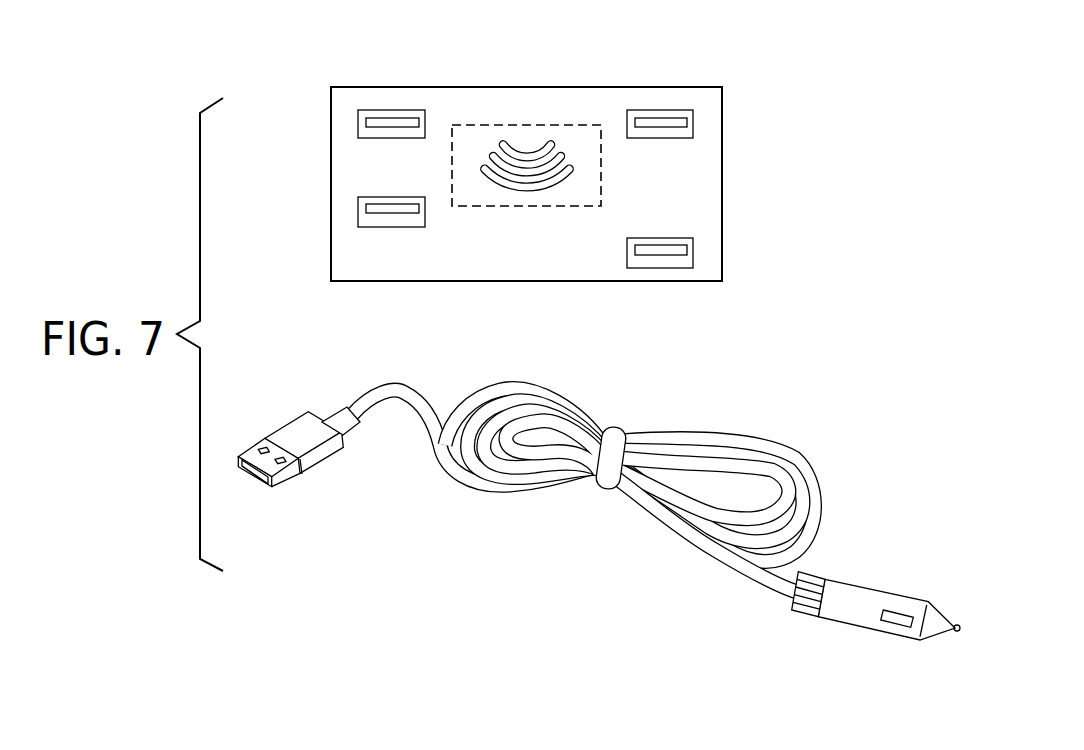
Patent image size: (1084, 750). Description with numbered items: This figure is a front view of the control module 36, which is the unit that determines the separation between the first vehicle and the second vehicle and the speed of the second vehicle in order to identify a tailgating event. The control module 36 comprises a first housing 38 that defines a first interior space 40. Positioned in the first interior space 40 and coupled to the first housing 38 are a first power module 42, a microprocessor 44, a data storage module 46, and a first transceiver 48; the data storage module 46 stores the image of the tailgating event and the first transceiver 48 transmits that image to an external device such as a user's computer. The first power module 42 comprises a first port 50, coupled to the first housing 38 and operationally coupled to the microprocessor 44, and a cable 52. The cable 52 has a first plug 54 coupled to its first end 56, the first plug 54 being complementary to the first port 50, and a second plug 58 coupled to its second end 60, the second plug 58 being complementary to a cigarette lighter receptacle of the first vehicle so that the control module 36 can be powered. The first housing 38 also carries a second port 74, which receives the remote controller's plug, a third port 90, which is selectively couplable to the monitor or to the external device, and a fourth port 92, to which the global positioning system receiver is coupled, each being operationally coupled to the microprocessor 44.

The control module 36 is at (550, 189).
The first housing 38 is at (722, 131).
The first interior space 40 is at (505, 103).
The first power module 42 is at (647, 268).
The microprocessor 44 is at (443, 260).
The data storage module 46 is at (474, 260).
The first transceiver 48 is at (513, 258).
The first port 50 is at (667, 268).
The cable 52 is at (573, 470).
The first plug 54 is at (316, 460).
The first end 56 is at (343, 427).
The second plug 58 is at (832, 638).
The second end 60 is at (797, 590).
The second port 74 is at (388, 108).
The third port 90 is at (360, 212).
The fourth port 92 is at (655, 108).